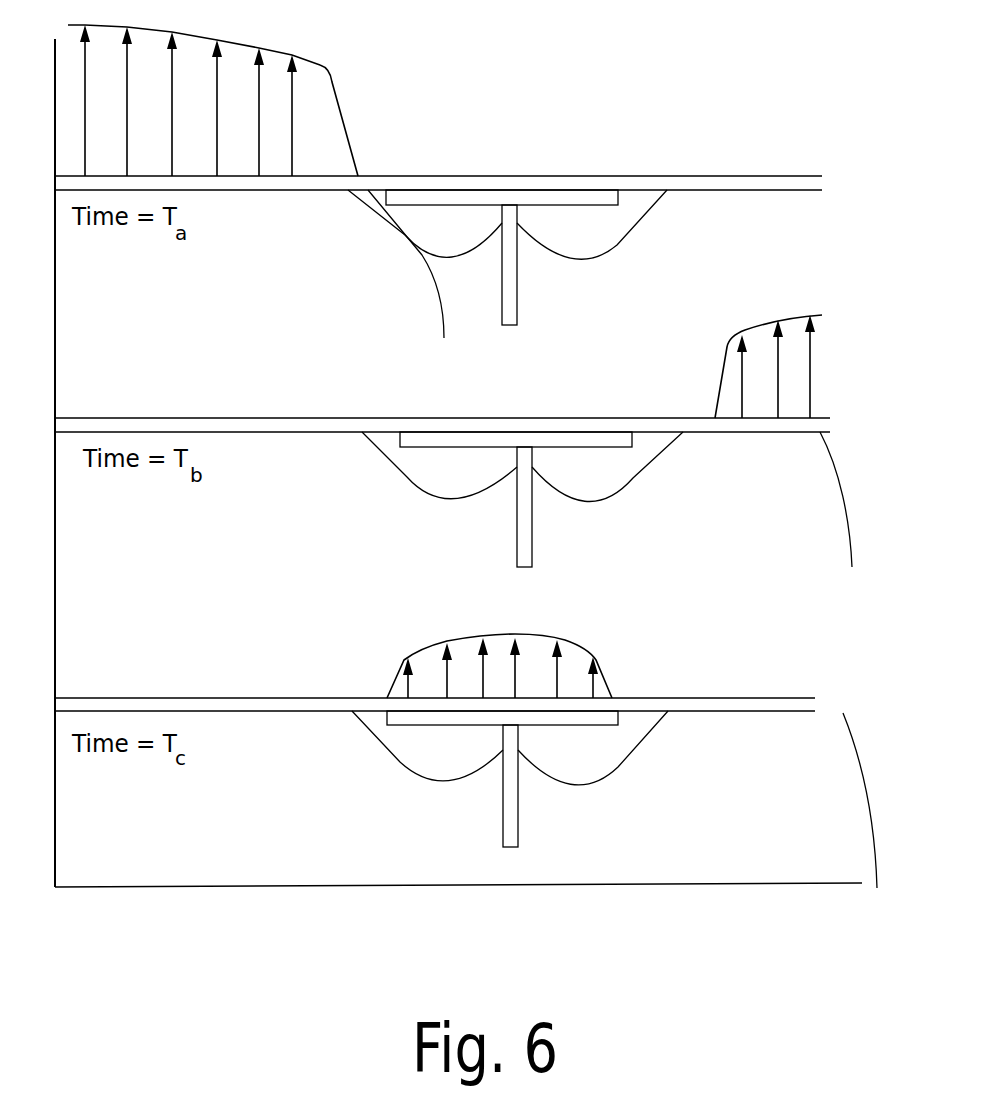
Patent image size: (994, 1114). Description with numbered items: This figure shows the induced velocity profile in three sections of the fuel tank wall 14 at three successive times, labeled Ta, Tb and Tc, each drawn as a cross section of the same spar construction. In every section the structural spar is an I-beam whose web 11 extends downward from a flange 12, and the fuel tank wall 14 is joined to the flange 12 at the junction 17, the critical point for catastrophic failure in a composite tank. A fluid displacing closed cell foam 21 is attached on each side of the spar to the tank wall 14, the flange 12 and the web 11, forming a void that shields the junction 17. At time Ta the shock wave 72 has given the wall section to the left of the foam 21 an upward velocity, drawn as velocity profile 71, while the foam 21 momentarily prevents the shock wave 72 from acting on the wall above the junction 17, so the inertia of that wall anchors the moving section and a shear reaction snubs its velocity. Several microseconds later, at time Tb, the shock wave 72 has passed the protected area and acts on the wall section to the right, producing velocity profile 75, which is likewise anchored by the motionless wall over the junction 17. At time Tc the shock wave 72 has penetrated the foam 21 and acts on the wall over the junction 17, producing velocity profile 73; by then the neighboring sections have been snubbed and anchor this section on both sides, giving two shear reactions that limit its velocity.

The web 11 is at (508, 270).
The flange 12 is at (558, 198).
The fuel tank wall 14 is at (695, 185).
The junction 17 is at (455, 188).
The closed cell foam 21 is at (373, 210).
The velocity profile 71 is at (320, 65).
The shock wave 72 is at (435, 305).
The velocity profile 73 is at (553, 640).
The velocity profile 75 is at (767, 320).